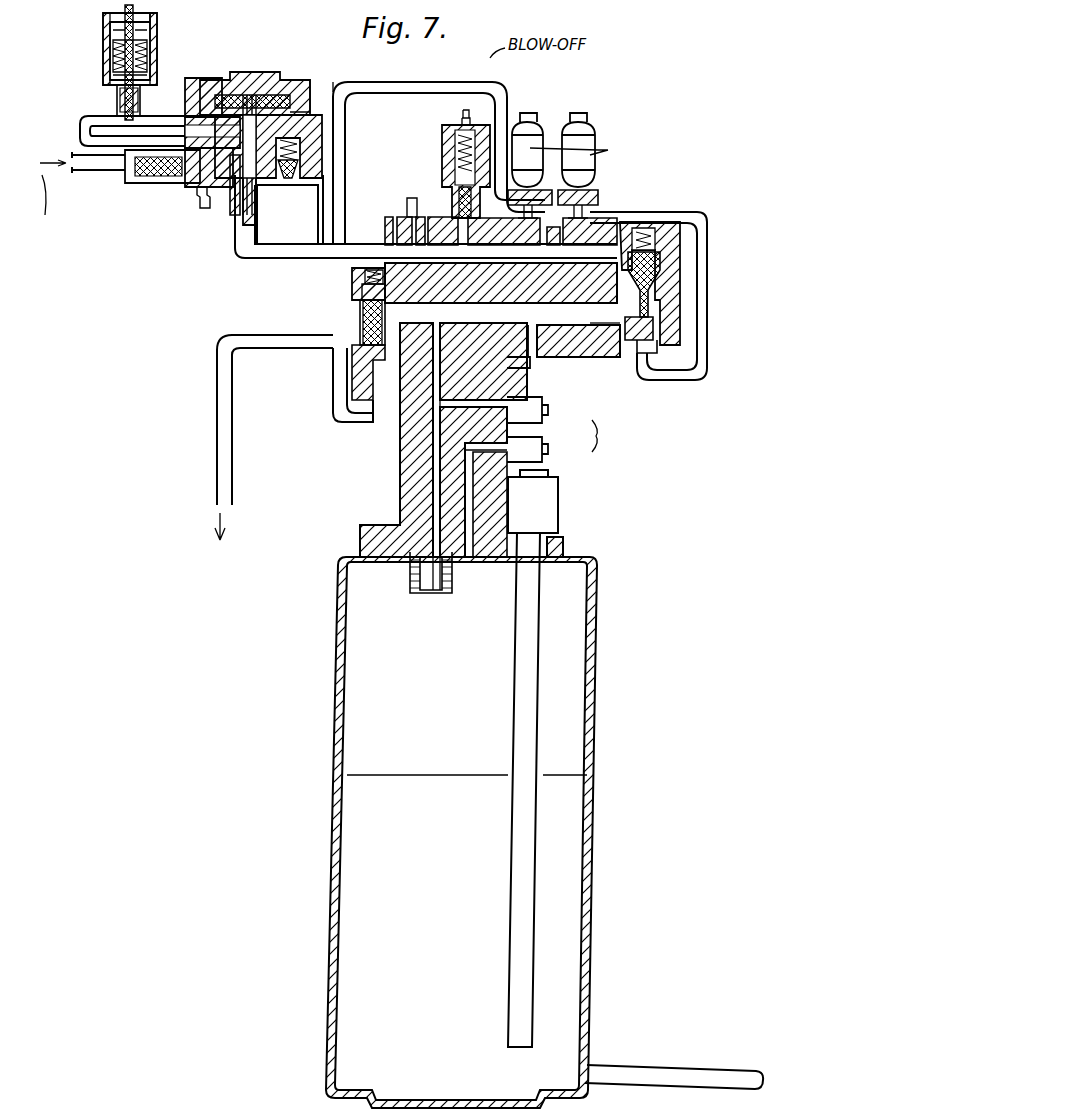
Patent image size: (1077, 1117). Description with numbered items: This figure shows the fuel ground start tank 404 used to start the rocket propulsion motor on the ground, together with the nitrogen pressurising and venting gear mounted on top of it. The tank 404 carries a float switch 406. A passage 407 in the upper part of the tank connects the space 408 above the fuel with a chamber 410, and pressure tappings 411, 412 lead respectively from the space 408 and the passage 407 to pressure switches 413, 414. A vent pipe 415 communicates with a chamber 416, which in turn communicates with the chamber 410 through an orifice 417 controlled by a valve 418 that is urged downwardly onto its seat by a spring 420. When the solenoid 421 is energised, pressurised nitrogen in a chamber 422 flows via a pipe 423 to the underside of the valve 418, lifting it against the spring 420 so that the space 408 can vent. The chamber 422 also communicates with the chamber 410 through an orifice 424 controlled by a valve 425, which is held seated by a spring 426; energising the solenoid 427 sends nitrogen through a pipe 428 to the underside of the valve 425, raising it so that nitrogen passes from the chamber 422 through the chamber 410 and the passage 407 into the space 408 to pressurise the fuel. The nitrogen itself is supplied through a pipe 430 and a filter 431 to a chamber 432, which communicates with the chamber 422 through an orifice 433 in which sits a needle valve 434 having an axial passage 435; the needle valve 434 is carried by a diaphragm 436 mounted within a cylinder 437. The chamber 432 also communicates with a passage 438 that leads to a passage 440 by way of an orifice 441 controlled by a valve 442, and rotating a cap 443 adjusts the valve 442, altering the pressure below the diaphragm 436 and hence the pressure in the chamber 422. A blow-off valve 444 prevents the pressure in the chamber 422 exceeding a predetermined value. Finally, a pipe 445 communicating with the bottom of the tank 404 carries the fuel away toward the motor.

The fuel ground start tank 404 is at (316, 787).
The float switch 406 is at (545, 502).
The passage 407 is at (405, 445).
The space above the fuel 408 is at (417, 778).
The chamber 410 is at (486, 293).
The pressure tapping 411 is at (470, 535).
The pressure tapping 412 is at (512, 365).
The pressure switch 413 is at (546, 447).
The pressure switch 414 is at (546, 410).
The vent pipe 415 is at (228, 440).
The chamber 416 is at (352, 360).
The orifice 417 is at (360, 322).
The valve 418 is at (362, 290).
The spring 420 is at (362, 274).
The solenoid 421 is at (528, 120).
The chamber 422 is at (358, 255).
The pipe 423 is at (418, 72).
The orifice 424 is at (628, 342).
The valve 425 is at (660, 275).
The spring 426 is at (640, 228).
The solenoid 427 is at (582, 120).
The pipe 428 is at (697, 340).
The pipe 430 is at (100, 165).
The filter 431 is at (158, 176).
The chamber 432 is at (232, 195).
The orifice 433 is at (268, 185).
The needle valve 434 is at (256, 125).
The axial passage 435 is at (318, 70).
The diaphragm 436 is at (260, 95).
The cylinder 437 is at (333, 90).
The passage 438 is at (88, 116).
The passage 440 is at (205, 112).
The orifice 441 is at (140, 100).
The valve 442 is at (150, 60).
The cap 443 is at (157, 45).
The blow-off valve 444 is at (449, 113).
The pipe 445 is at (642, 1070).